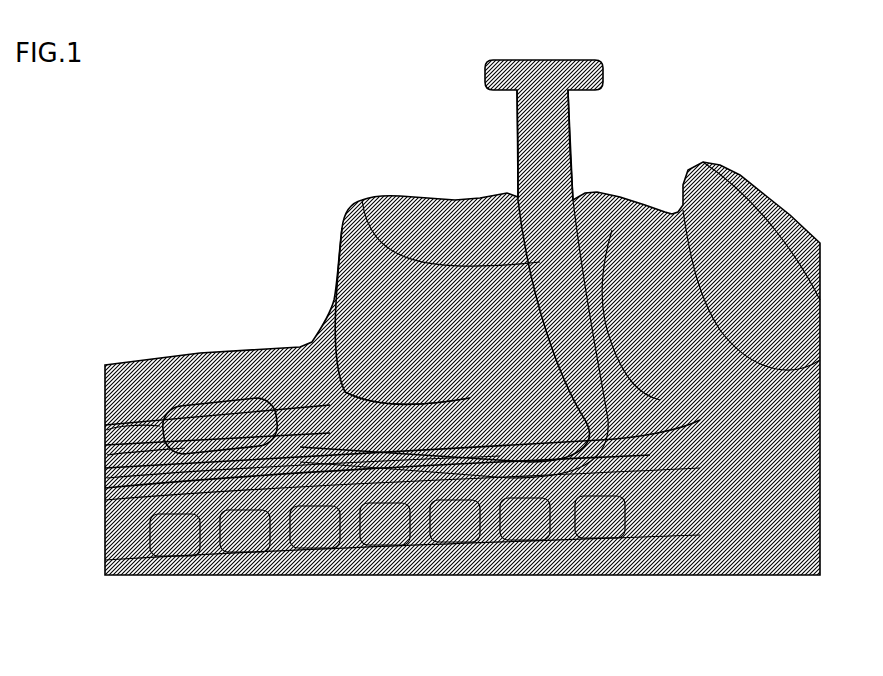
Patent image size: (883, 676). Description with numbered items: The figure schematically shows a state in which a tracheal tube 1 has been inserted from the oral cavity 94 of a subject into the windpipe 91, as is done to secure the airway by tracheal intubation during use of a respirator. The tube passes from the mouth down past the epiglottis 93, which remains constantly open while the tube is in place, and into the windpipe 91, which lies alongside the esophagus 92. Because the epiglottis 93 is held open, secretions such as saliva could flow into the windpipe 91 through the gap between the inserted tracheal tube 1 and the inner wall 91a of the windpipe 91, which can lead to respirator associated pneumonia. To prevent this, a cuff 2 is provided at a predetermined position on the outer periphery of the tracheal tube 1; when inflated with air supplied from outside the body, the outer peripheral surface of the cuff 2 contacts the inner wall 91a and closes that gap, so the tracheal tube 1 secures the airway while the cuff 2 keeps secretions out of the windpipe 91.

The tracheal tube 1 is at (551, 143).
The cuff 2 is at (236, 420).
The windpipe 91 is at (107, 450).
The inner wall 91a is at (107, 438).
The esophagus 92 is at (115, 496).
The epiglottis 93 is at (388, 385).
The oral cavity 94 is at (607, 300).